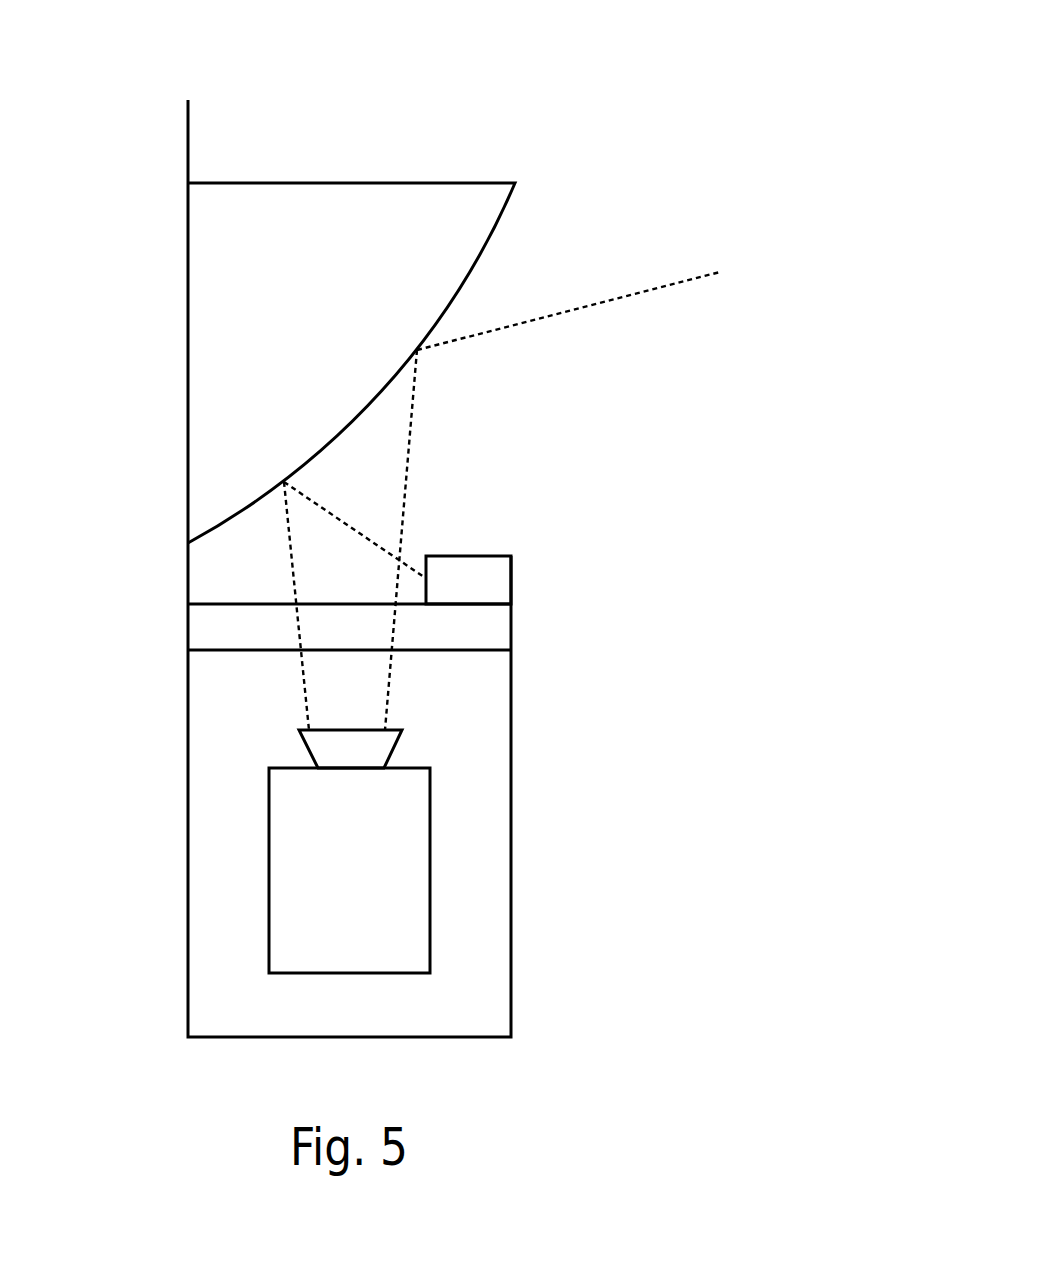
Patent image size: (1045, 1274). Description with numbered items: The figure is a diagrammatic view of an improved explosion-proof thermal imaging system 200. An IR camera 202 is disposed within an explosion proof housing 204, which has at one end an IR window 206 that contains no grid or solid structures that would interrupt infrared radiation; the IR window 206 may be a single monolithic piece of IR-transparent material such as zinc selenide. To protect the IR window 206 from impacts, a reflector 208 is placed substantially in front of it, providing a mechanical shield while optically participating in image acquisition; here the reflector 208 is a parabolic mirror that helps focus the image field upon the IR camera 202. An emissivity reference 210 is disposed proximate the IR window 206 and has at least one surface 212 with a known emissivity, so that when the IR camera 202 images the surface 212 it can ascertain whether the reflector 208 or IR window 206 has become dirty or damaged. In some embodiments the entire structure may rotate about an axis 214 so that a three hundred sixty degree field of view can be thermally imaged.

The thermal imaging system 200 is at (650, 146).
The IR camera 202 is at (430, 814).
The explosion proof housing 204 is at (511, 922).
The IR window 206 is at (220, 604).
The reflector 208 is at (501, 220).
The emissivity reference 210 is at (500, 556).
The surface 212 is at (413, 568).
The axis 214 is at (188, 127).